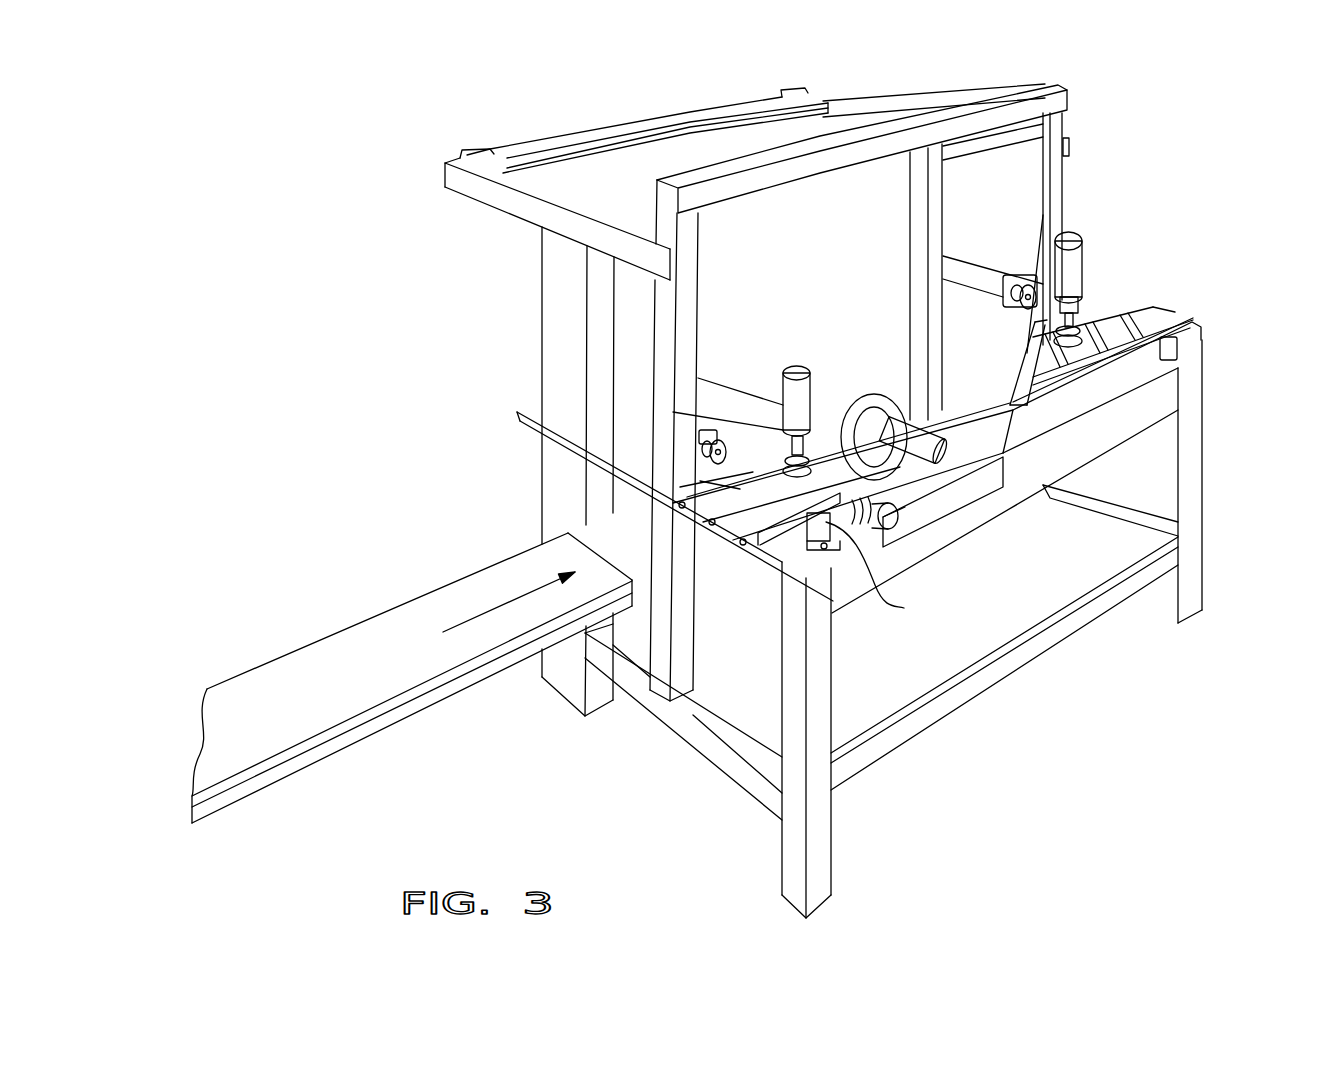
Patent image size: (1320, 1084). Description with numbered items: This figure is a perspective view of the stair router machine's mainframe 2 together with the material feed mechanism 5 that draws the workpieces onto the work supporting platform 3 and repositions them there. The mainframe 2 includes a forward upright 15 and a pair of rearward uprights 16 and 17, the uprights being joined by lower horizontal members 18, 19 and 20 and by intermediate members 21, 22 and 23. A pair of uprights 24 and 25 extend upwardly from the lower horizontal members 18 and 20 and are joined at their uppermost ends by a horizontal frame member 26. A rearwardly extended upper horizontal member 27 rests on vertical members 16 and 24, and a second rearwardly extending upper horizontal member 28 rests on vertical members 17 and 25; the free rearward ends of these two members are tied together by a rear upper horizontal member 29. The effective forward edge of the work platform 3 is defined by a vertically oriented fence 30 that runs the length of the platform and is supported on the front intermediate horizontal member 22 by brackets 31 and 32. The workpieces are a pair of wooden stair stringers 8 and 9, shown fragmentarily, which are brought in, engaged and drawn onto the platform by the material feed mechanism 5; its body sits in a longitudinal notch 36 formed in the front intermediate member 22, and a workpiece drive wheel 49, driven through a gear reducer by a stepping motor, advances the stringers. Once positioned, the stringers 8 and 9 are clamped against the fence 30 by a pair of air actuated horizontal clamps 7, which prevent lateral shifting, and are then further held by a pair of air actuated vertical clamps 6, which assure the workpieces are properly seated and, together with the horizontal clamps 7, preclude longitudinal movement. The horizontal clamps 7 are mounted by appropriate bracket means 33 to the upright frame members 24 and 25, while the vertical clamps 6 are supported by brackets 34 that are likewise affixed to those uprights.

The mainframe 2 is at (848, 490).
The work supporting platform 3 is at (1100, 312).
The material feed mechanism 5 is at (943, 470).
The vertical clamps 6 is at (800, 370).
The horizontal clamps 7 is at (727, 437).
The stair stringer 8 is at (355, 653).
The stair stringer 9 is at (368, 735).
The forward upright 15 is at (1205, 577).
The rearward upright 16 is at (553, 306).
The rearward upright 17 is at (910, 186).
The lower horizontal member 18 is at (708, 752).
The lower horizontal member 19 is at (1080, 613).
The lower horizontal member 20 is at (1107, 500).
The intermediate member 21 is at (535, 410).
The front intermediate horizontal member 22 is at (1087, 448).
The intermediate member 23 is at (953, 260).
The upright 24 is at (690, 277).
The upright 25 is at (1058, 130).
The horizontal frame member 26 is at (777, 178).
The rearwardly extended upper horizontal member 27 is at (507, 198).
The rearwardly extending upper horizontal member 28 is at (890, 103).
The rear upper horizontal member 29 is at (625, 135).
The fence 30 is at (1098, 380).
The bracket 31 is at (871, 569).
The bracket 32 is at (1177, 350).
The roller bracket 33 is at (707, 433).
The bracket 34 is at (770, 407).
The longitudinal notch 36 is at (907, 527).
The workpiece drive wheel 49 is at (878, 395).